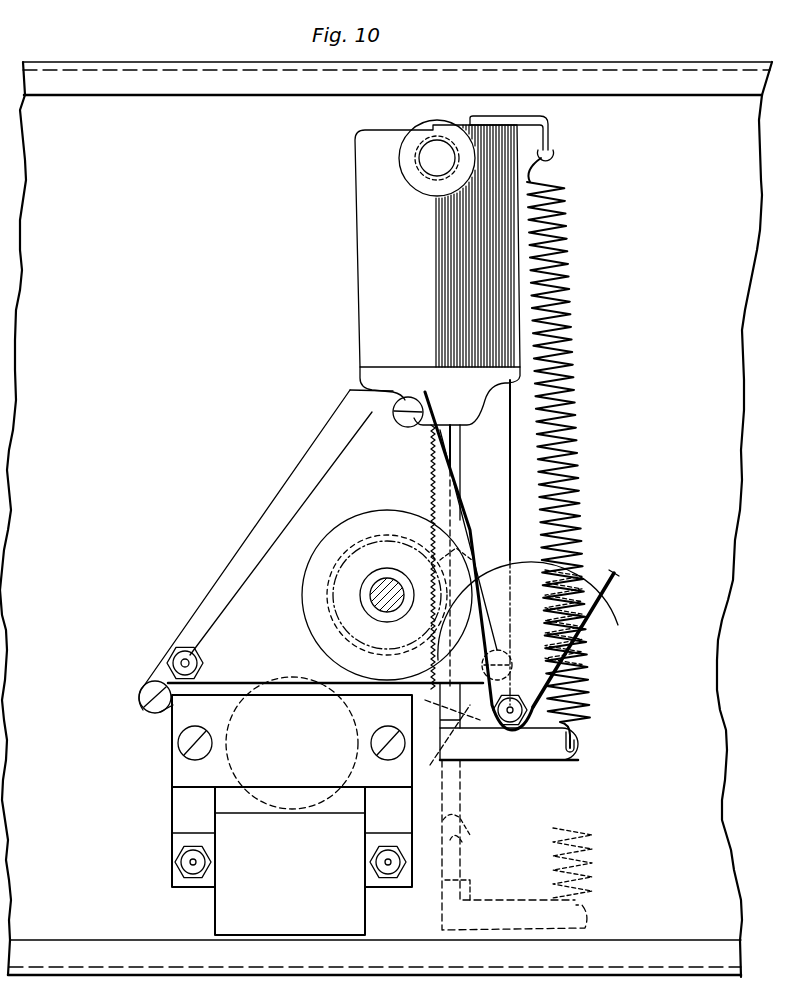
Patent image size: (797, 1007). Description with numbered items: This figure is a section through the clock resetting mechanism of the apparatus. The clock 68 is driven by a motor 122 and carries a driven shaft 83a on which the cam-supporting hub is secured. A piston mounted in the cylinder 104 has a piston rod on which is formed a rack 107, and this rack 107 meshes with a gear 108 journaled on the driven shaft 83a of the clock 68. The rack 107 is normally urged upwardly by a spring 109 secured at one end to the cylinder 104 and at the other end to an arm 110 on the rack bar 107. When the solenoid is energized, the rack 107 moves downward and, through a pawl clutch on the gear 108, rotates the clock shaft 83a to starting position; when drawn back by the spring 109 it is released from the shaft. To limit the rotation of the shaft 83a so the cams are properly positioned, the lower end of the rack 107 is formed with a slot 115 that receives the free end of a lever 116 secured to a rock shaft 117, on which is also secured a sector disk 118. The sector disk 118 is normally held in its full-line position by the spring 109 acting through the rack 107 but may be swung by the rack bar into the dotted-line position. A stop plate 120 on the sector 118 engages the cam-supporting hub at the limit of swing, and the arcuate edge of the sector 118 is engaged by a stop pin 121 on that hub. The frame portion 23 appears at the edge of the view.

The bed plate 23 is at (656, 82).
The cylinder 104 is at (355, 190).
The spring 109 is at (552, 232).
The rack 107 is at (452, 463).
The stop pin 121 is at (456, 548).
The sector disk 118 is at (532, 590).
The stop plate 120 is at (617, 580).
The gear 108 is at (398, 545).
The clock 68 is at (311, 551).
The driven shaft 83a is at (385, 598).
The motor 122 is at (292, 806).
The slot 115 is at (440, 702).
The rock shaft 117 is at (568, 738).
The arm 110 is at (545, 760).
The lever 116 is at (475, 740).